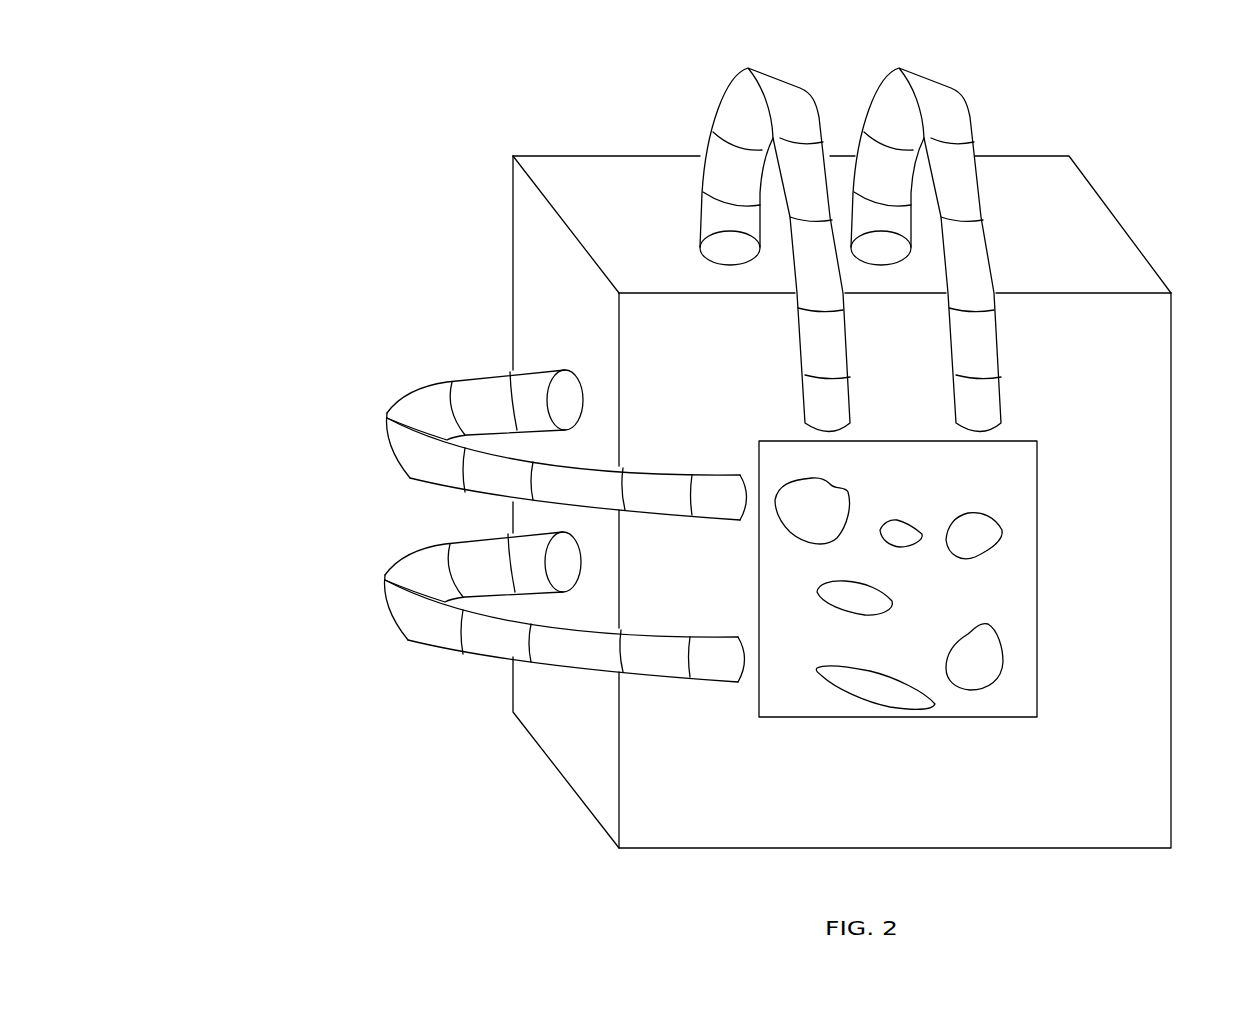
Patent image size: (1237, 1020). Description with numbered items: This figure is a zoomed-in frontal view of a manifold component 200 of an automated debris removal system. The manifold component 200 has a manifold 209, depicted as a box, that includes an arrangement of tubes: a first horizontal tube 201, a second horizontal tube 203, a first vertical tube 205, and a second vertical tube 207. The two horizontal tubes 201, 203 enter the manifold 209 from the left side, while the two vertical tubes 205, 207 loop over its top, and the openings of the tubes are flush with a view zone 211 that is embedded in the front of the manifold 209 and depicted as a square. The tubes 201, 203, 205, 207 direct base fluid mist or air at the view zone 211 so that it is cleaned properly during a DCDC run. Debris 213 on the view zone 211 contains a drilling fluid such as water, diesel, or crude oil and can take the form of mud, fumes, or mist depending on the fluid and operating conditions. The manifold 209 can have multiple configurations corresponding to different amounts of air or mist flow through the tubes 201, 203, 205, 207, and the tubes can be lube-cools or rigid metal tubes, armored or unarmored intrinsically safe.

The manifold component 200 is at (388, 82).
The horizontal tube 1 201 is at (393, 610).
The horizontal tube 2 203 is at (387, 430).
The vertical tube 1 205 is at (716, 108).
The vertical tube 2 207 is at (1003, 125).
The manifold 209 is at (1113, 213).
The view zone 211 is at (1068, 549).
The debris 213 is at (1001, 663).